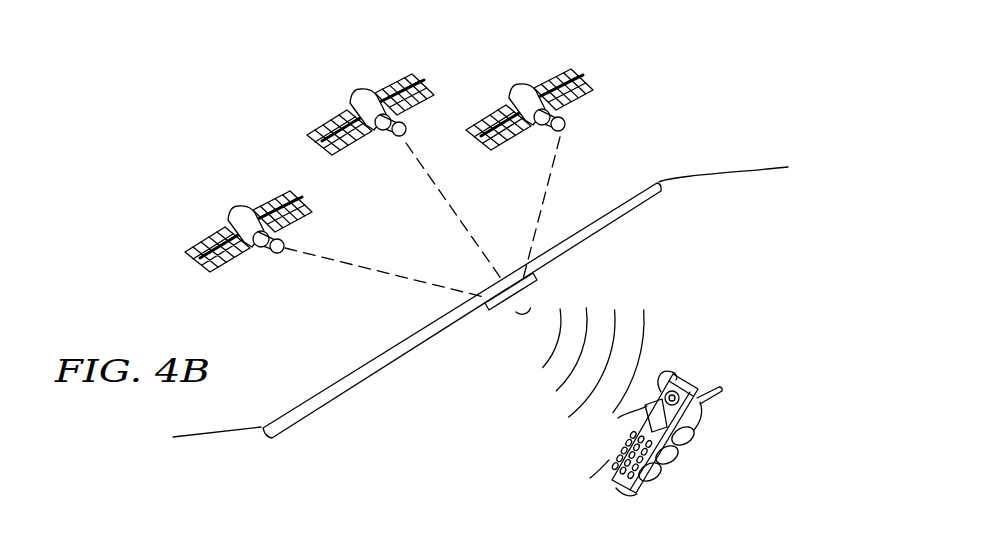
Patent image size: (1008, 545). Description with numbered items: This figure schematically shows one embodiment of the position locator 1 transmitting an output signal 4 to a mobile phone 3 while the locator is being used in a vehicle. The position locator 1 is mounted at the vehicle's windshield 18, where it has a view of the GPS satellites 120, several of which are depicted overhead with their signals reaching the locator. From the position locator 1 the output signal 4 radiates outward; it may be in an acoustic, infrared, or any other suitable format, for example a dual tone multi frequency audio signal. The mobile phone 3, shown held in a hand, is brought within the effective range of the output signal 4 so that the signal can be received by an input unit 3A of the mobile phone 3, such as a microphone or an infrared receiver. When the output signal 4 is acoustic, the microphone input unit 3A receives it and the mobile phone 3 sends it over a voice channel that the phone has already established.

The position locator 1 is at (530, 293).
The mobile phone 3 is at (688, 376).
The input unit 3A is at (607, 462).
The output signal 4 is at (516, 326).
The windshield 18 is at (318, 398).
The GPS satellites 120 is at (237, 207).